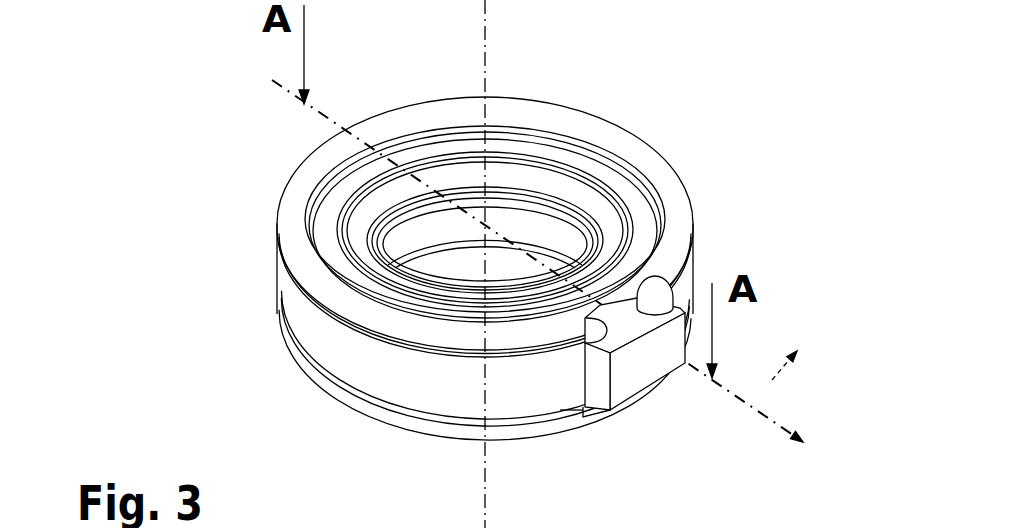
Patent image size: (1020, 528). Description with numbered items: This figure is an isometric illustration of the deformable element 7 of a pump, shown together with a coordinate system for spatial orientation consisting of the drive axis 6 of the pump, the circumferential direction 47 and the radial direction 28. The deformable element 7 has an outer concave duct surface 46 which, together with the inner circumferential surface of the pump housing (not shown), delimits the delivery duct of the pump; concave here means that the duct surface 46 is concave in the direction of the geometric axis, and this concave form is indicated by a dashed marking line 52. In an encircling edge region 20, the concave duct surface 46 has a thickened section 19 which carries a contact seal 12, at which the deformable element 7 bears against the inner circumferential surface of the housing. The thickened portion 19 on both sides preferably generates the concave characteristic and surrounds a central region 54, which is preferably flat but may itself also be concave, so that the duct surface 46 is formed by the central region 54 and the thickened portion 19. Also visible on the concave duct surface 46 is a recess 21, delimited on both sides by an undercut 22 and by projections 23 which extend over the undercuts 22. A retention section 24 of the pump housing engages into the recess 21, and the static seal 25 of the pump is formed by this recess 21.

The drive axis 6 is at (485, 90).
The deformable element 7 is at (228, 106).
The contact seal 12 is at (293, 205).
The thickened section 19 is at (297, 174).
The encircling edge region 20 is at (363, 132).
The recess 21 is at (687, 342).
The undercut 22 is at (640, 272).
The projection 23 is at (598, 322).
The retention section 24 is at (622, 383).
The static seal 25 is at (618, 300).
The radial direction 28 is at (772, 423).
The concave duct surface 46 is at (304, 320).
The circumferential direction 47 is at (772, 380).
The dashed marking line 52 is at (275, 226).
The central region 54 is at (277, 289).